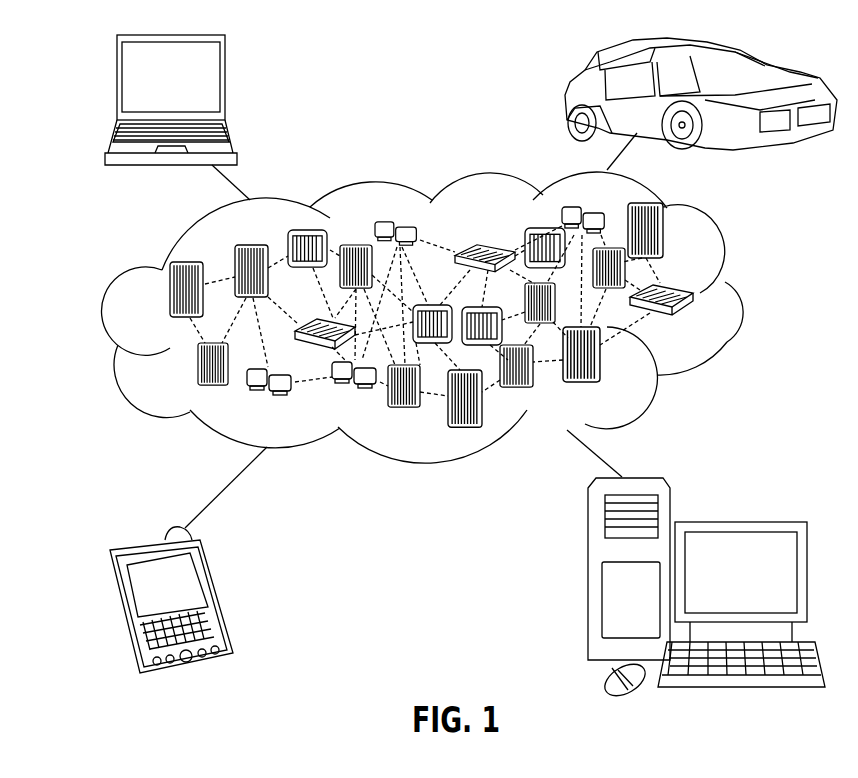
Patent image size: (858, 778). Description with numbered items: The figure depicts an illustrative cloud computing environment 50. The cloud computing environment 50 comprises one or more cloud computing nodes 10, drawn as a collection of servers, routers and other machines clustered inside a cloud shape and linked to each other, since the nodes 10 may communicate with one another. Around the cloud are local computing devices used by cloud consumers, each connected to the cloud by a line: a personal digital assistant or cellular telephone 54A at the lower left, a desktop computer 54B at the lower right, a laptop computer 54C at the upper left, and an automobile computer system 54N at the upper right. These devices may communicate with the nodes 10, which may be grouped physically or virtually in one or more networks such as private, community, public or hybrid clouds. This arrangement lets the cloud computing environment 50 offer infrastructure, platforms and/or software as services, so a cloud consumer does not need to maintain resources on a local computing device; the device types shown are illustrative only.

The cloud computing nodes 10 is at (701, 325).
The cloud computing environment 50 is at (738, 293).
The personal digital assistant or cellular telephone 54A is at (215, 597).
The desktop computer 54B is at (738, 520).
The laptop computer 54C is at (225, 85).
The automobile computer system 54N is at (565, 97).